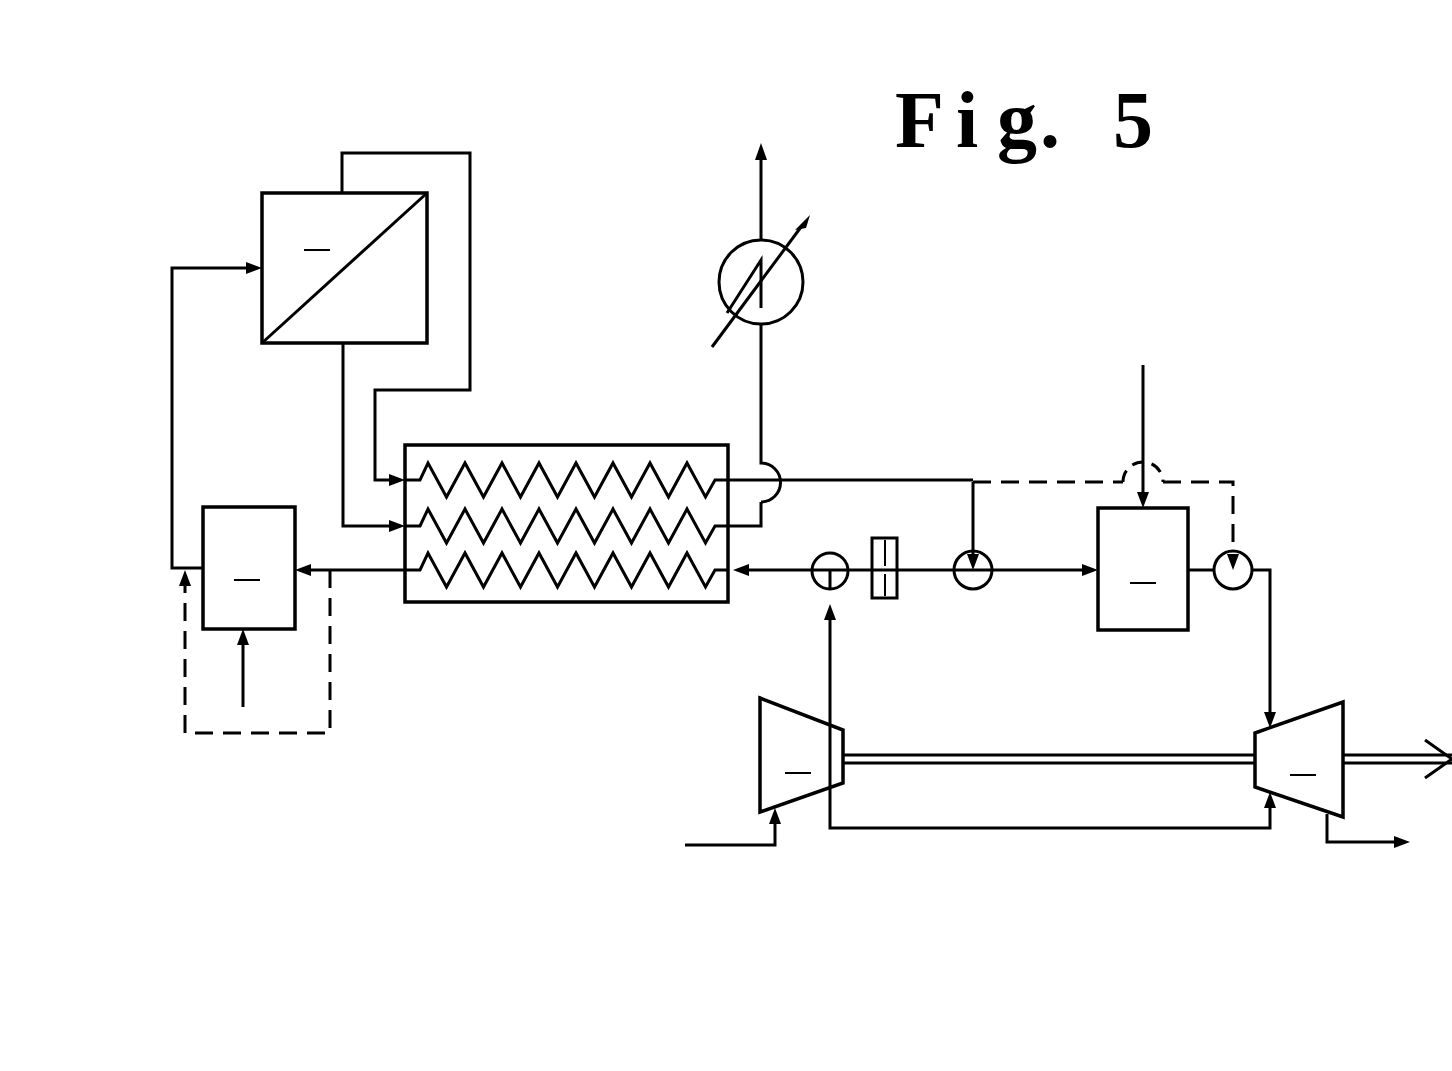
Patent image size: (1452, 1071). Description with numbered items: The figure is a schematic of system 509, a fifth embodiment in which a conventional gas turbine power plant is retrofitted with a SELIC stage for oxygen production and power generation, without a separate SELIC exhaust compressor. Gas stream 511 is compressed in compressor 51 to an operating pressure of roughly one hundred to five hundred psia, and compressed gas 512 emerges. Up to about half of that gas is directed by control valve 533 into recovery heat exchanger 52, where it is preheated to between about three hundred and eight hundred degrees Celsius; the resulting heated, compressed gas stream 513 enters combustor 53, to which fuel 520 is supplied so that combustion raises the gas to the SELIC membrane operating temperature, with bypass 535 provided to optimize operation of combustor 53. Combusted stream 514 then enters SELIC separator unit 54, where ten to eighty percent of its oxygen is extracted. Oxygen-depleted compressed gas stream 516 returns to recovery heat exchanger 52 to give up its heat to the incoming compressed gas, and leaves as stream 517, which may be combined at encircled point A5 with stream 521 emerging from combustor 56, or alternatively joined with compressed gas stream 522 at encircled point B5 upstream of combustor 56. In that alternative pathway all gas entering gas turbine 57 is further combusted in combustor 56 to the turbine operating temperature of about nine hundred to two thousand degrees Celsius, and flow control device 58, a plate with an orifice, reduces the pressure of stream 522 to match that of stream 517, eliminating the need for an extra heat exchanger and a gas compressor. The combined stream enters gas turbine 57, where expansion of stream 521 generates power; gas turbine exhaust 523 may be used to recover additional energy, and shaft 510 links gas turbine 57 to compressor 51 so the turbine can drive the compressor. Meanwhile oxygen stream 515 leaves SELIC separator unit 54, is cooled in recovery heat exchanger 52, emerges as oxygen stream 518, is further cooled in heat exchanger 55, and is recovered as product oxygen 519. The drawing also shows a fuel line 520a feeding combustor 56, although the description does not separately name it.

The compressor 51 is at (801, 755).
The recovery heat exchanger 52 is at (517, 603).
The combustor 53 is at (249, 568).
The SELIC separator unit 54 is at (344, 277).
The heat exchanger 55 is at (803, 282).
The combustor 56 is at (1143, 569).
The gas turbine 57 is at (1299, 759).
The flow control device 58 is at (898, 558).
The system 509 is at (1040, 280).
The shaft 510 is at (1080, 748).
The gas stream 511 is at (737, 842).
The compressed gas 512 is at (830, 668).
The heated, compressed gas stream 513 is at (330, 572).
The combusted stream 514 is at (173, 355).
The oxygen stream 515 is at (343, 403).
The oxygen-depleted compressed gas stream 516 is at (378, 153).
The stream 517 is at (873, 480).
The oxygen stream 518 is at (762, 524).
The product oxygen 519 is at (761, 190).
The fuel 520 is at (243, 665).
The fuel line to combustor 56 520a is at (1145, 430).
The stream 521 is at (1202, 573).
The compressed gas stream 522 is at (858, 574).
The gas turbine exhaust 523 is at (1352, 842).
The control valve 533 is at (812, 575).
The bypass 535 is at (260, 733).
The encircled point A5 is at (1243, 556).
The encircled point B5 is at (990, 560).